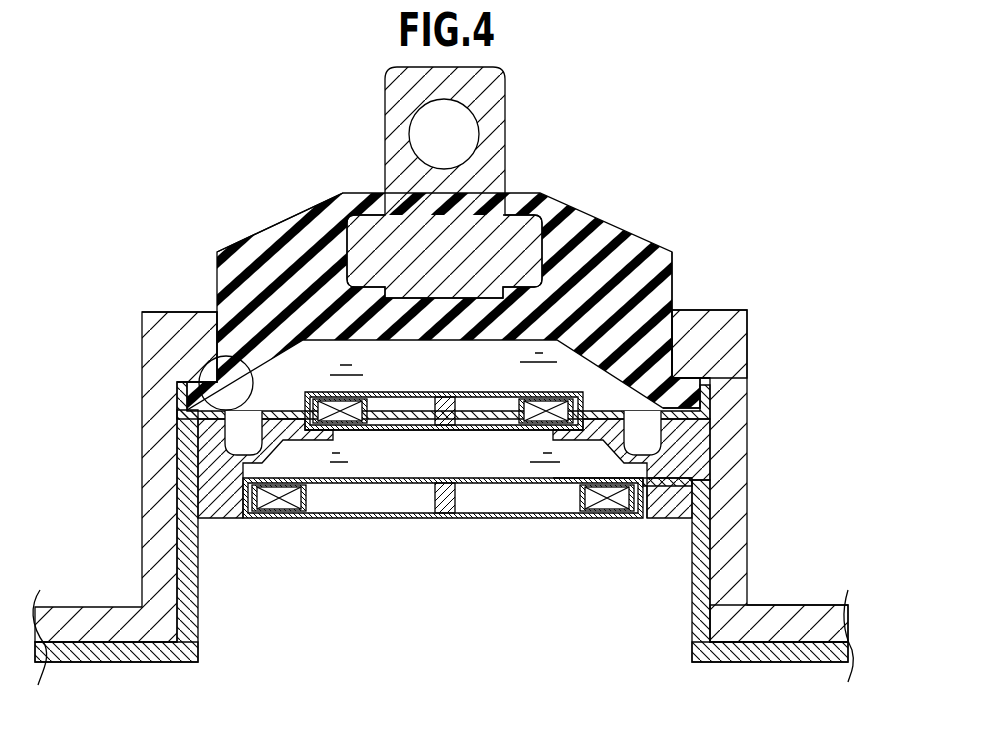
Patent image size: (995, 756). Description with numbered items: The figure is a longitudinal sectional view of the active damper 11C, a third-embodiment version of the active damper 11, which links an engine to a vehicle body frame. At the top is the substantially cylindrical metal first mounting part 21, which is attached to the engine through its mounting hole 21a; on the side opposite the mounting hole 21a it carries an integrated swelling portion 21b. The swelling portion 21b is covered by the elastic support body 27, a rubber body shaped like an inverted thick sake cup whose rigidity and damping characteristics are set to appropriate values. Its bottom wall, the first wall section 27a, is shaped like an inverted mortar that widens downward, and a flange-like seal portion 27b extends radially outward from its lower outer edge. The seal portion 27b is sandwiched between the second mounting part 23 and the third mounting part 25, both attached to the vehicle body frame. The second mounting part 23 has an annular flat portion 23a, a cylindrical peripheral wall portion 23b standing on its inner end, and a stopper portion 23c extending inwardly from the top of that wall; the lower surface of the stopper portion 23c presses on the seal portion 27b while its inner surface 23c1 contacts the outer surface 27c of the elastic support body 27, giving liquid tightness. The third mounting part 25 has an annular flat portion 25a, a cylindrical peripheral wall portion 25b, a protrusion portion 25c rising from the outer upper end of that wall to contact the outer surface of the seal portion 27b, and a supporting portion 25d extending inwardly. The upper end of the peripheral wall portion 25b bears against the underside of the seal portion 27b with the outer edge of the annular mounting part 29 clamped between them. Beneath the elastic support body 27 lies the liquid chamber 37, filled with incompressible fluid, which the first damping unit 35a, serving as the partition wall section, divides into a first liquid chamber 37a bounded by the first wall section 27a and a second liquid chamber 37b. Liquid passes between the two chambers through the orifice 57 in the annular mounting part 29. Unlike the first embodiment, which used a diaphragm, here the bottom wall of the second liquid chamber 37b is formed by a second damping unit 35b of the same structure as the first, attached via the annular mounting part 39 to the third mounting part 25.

The active damper 11 is at (453, 377).
The active damper according to the third embodiment 11C is at (443, 377).
The first mounting part 21 is at (497, 135).
The mounting hole 21a is at (427, 117).
The swelling portion 21b is at (520, 257).
The second mounting part 23 is at (753, 352).
The flat portion 23a is at (787, 618).
The peripheral wall portion 23b is at (722, 458).
The stopper portion 23c is at (690, 345).
The inner surface of the stopper portion 23c1 is at (662, 372).
The third mounting part 25 is at (690, 600).
The flat portion 25a is at (753, 657).
The peripheral wall portion 25b is at (712, 482).
The protrusion portion 25c is at (712, 414).
The supporting portion 25d is at (587, 483).
The elastic support body 27 is at (630, 243).
The first wall section 27a is at (312, 285).
The seal portion 27b is at (688, 394).
The outer surface of the elastic support body 27c is at (676, 290).
The annular mounting part 29 is at (672, 480).
The first damping unit 35a is at (395, 440).
The second damping unit 35b is at (443, 538).
The liquid chamber 37 is at (444, 391).
The first liquid chamber 37a is at (510, 381).
The second liquid chamber 37b is at (474, 475).
The annular mounting part 39 is at (657, 503).
The orifice 57 is at (205, 362).